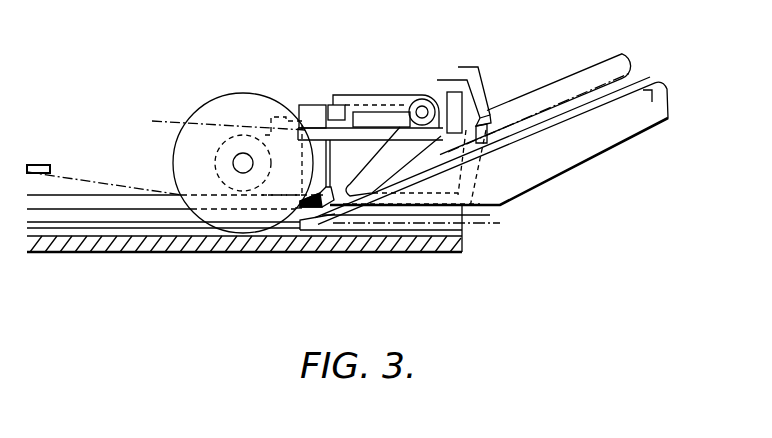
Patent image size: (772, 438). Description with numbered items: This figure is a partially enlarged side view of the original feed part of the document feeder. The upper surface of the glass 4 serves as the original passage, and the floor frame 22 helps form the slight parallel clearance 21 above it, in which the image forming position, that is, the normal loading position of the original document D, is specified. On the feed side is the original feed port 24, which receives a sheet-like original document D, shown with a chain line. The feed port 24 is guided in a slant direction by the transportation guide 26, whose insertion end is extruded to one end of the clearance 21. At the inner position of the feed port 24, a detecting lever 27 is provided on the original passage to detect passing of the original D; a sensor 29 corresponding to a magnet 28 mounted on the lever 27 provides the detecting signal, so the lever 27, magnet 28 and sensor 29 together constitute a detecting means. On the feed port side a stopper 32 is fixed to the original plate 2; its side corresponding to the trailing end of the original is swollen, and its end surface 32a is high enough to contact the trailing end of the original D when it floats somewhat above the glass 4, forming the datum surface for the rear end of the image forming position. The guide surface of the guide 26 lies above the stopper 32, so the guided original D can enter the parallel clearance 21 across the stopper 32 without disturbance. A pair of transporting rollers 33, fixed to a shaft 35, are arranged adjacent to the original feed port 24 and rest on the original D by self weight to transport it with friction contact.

The original plate 2 is at (470, 243).
The glass 4 is at (195, 247).
The parallel clearance 21 is at (147, 228).
The floor frame 22 is at (92, 219).
The original feed port 24 is at (497, 113).
The transportation guide 26 is at (602, 132).
The detecting lever 27 is at (382, 94).
The magnet 28 is at (338, 110).
The sensor 29 is at (310, 110).
The stopper 32 is at (382, 231).
The end surface 32a is at (297, 225).
The transporting rollers 33 is at (210, 110).
The shaft 35 is at (241, 153).
The original document D is at (641, 73).